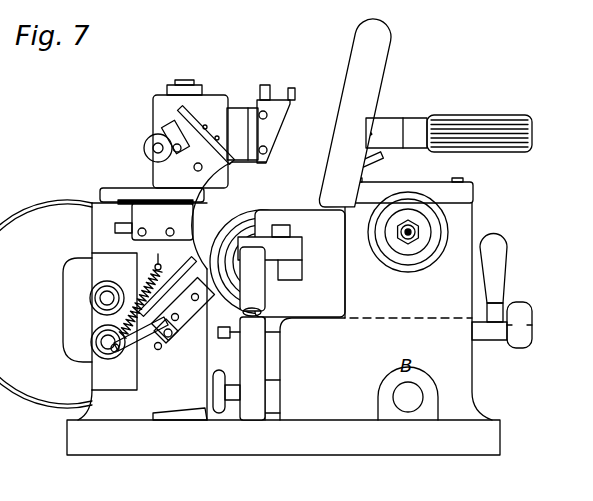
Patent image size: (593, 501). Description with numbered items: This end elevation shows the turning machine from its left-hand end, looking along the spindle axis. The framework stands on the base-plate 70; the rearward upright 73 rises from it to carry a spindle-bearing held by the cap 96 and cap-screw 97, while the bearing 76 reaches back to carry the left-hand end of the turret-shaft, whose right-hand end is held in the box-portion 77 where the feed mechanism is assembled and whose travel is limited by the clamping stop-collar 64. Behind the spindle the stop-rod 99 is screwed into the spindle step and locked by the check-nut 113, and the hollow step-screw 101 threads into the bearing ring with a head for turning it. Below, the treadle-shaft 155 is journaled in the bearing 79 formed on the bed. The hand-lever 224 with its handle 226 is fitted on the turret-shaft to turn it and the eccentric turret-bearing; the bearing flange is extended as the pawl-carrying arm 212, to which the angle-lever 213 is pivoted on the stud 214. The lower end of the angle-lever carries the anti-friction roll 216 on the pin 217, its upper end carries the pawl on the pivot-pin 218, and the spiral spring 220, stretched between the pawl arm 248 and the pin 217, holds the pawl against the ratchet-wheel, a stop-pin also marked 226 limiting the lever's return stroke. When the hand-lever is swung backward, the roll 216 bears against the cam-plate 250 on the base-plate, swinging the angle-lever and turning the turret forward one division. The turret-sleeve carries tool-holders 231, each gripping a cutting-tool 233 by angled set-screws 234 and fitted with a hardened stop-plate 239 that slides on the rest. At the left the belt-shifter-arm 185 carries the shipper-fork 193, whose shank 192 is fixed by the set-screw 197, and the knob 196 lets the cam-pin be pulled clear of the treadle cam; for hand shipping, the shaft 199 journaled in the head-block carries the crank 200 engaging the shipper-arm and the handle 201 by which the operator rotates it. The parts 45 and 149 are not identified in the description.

The knurled handle 45 is at (478, 117).
The clamping stop-collar 64 is at (253, 240).
The base-plate 70 is at (340, 445).
The rearward upright 73 is at (463, 218).
The bearing 76 is at (308, 220).
The box-portion 77 is at (103, 222).
The bearing 79 is at (423, 382).
The cap 96 is at (460, 193).
The cap-screw 97 is at (459, 181).
The stop-rod 99 is at (412, 237).
The hollow step-screw 101 is at (402, 247).
The check-nut 113 is at (398, 235).
The lever handle 149 is at (498, 245).
The cam-shaft 155 is at (413, 403).
The belt-shifter-arm 185 is at (257, 400).
The shipper-shank 192 is at (267, 312).
The shipper-fork 193 is at (252, 287).
The knob 196 is at (213, 390).
The set-screw 197 is at (225, 338).
The rod 199 is at (490, 333).
The crank 200 is at (270, 333).
The handle 201 is at (520, 312).
The pawl-carrying arm 212 is at (193, 318).
The angle-lever 213 is at (135, 340).
The stud 214 is at (160, 347).
The anti-friction roll 216 is at (205, 301).
The pin 217 is at (120, 343).
The pivot-pin 218 is at (160, 272).
The spiral spring 220 is at (137, 297).
The hand-lever 224 is at (343, 62).
The handle 226 is at (158, 358).
The tool-holder 231 is at (239, 220).
The cutting-tool 233 is at (165, 128).
The set-screw 234 is at (262, 115).
The stop-plate 239 is at (185, 112).
The pawl arm 248 is at (151, 254).
The cam-plate 250 is at (180, 412).